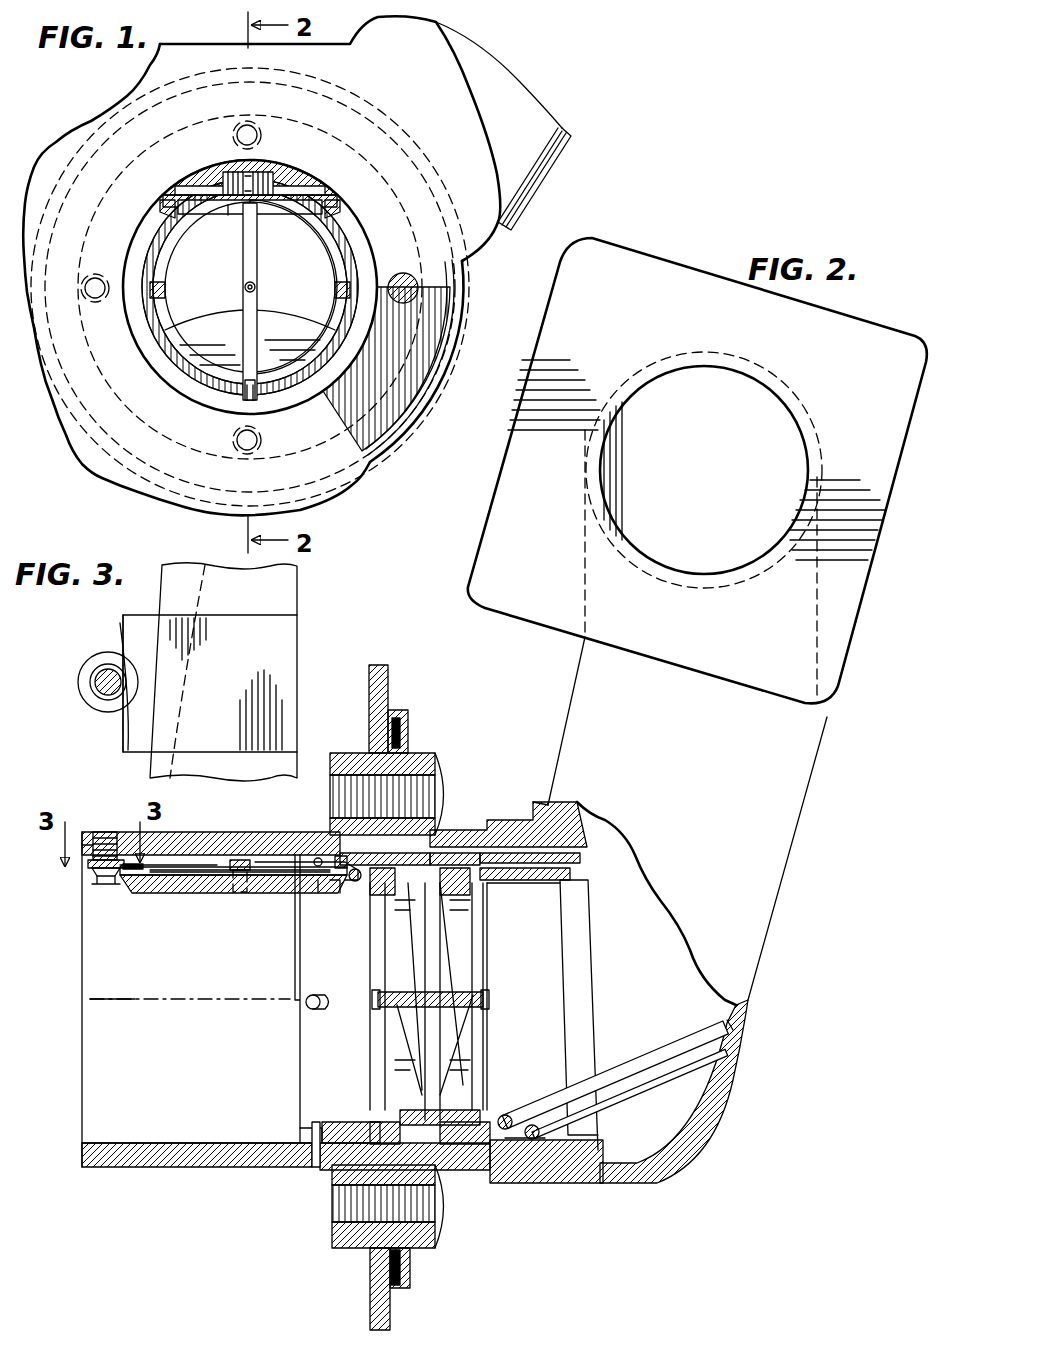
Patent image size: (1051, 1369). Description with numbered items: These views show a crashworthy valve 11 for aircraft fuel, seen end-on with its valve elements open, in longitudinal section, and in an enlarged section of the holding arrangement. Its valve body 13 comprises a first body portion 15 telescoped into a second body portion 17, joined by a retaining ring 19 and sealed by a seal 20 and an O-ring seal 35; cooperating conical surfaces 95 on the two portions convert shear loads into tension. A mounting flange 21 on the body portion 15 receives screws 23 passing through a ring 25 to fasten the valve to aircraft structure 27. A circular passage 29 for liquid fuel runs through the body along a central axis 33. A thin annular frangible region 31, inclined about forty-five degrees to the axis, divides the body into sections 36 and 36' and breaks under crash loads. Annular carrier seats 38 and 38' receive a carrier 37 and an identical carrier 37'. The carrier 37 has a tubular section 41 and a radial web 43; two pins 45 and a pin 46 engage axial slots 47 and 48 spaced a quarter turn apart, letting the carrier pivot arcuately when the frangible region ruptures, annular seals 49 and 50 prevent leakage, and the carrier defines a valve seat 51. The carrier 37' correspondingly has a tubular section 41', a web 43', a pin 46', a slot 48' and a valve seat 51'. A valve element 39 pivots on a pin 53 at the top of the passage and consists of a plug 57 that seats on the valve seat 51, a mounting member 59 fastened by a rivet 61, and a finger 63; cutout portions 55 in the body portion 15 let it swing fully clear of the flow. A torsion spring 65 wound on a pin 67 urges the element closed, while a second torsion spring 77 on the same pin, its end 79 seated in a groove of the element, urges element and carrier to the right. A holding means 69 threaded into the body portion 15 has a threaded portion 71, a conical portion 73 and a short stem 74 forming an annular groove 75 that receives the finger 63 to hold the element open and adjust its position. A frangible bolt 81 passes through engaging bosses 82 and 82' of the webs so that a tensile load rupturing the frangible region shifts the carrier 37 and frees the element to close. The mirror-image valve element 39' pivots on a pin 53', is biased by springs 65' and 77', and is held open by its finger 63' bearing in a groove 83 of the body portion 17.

In FIG. 3, the crashworthy valve 11 is at (627, 1195).
In FIG. 3, the valve body 13 is at (125, 1172).
In FIG. 1, the first body portion 15 is at (205, 403).
In FIG. 3, the first body portion 15 is at (195, 1168).
In FIG. 3, the second body portion 17 is at (703, 1132).
In FIG. 3, the retaining ring 19 is at (500, 830).
In FIG. 3, the seal 20 is at (468, 848).
In FIG. 3, the mounting flange 21 is at (410, 1290).
In FIG. 1, the screws 23 is at (420, 298).
In FIG. 3, the screws 23 is at (410, 780).
In FIG. 3, the ring 25 is at (412, 1252).
In FIG. 1, the aircraft structure 27 is at (80, 132).
In FIG. 3, the aircraft structure 27 is at (372, 1300).
In FIG. 1, the passage 29 is at (180, 295).
In FIG. 3, the passage 29 is at (118, 963).
In FIG. 3, the frangible region 31 is at (445, 850).
In FIG. 3, the central axis 33 is at (135, 1000).
In FIG. 3, the O-ring seal 35 is at (578, 806).
In FIG. 3, the body section 36 is at (345, 1181).
In FIG. 3, the carrier 37 is at (404, 996).
In FIG. 3, the annular carrier seat 38 is at (385, 895).
In FIG. 1, the valve element 39 is at (250, 228).
In FIG. 3, the valve element 39 is at (168, 731).
In FIG. 1, the tubular section 41 is at (231, 287).
In FIG. 3, the tubular section 41 is at (296, 999).
In FIG. 1, the web 43 is at (272, 301).
In FIG. 3, the web 43 is at (400, 1001).
In FIG. 3, the pins 45 is at (310, 1012).
In FIG. 1, the radial pin 46 is at (278, 412).
In FIG. 3, the radial pin 46 is at (299, 1161).
In FIG. 1, the slots 47 is at (360, 297).
In FIG. 3, the slots 47 is at (305, 1003).
In FIG. 1, the slot 48 is at (218, 416).
In FIG. 3, the slot 48 is at (280, 1125).
In FIG. 3, the annular seal 49 is at (420, 1115).
In FIG. 3, the annular seal 50 is at (435, 1168).
In FIG. 3, the annular valve seat 51 is at (351, 1103).
In FIG. 3, the pin 53 is at (326, 845).
In FIG. 1, the cutout portions 55 is at (345, 197).
In FIG. 3, the plate or plug 57 is at (280, 598).
In FIG. 3, the mounting member 59 is at (275, 638).
In FIG. 3, the rivet 61 is at (238, 860).
In FIG. 3, the tab or finger 63 is at (130, 732).
In FIG. 1, the torsion spring 65 is at (250, 157).
In FIG. 3, the torsion spring 65 is at (240, 894).
In FIG. 1, the pin 67 is at (196, 178).
In FIG. 3, the pin 67 is at (305, 862).
In FIG. 3, the holding means 69 is at (95, 712).
In FIG. 3, the threaded portion 71 is at (92, 847).
In FIG. 3, the conical portion 73 is at (88, 700).
In FIG. 3, the short stem 74 is at (105, 668).
In FIG. 3, the annular groove 75 is at (93, 682).
In FIG. 1, the torsion spring 77 is at (235, 155).
In FIG. 3, the torsion spring 77 is at (345, 901).
In FIG. 1, the end 79 is at (228, 208).
In FIG. 3, the end 79 is at (312, 893).
In FIG. 3, the frangible bolt 81 is at (410, 990).
In FIG. 3, the boss 82 is at (368, 1009).
In FIG. 3, the groove 83 is at (700, 1052).
In FIG. 3, the conical surfaces 95 is at (440, 800).
In FIG. 3, the carrier 37' is at (513, 996).
In FIG. 3, the annular carrier seat 38' is at (451, 895).
In FIG. 1, the valve element 39' is at (293, 287).
In FIG. 3, the valve element 39' is at (615, 1057).
In FIG. 3, the tubular section 41' is at (594, 1015).
In FIG. 3, the web 43' is at (463, 985).
In FIG. 3, the radial pin 46' is at (555, 853).
In FIG. 3, the slot 48' is at (555, 879).
In FIG. 3, the annular valve seat 51' is at (523, 903).
In FIG. 3, the pin 53' is at (514, 1096).
In FIG. 3, the finger 63' is at (762, 1029).
In FIG. 3, the torsion spring 65' is at (587, 1136).
In FIG. 3, the torsion spring 77' is at (571, 1118).
In FIG. 3, the boss 82' is at (485, 986).
In FIG. 3, the body section 36' is at (546, 1183).